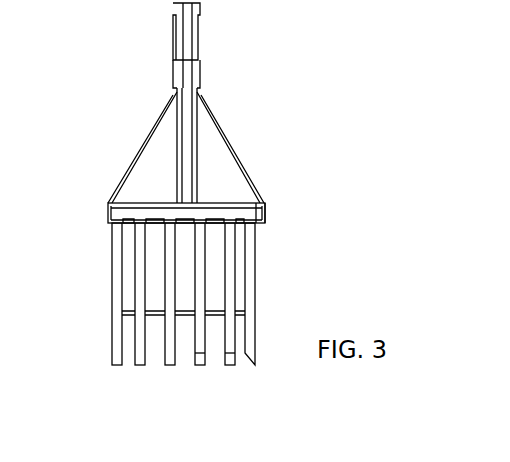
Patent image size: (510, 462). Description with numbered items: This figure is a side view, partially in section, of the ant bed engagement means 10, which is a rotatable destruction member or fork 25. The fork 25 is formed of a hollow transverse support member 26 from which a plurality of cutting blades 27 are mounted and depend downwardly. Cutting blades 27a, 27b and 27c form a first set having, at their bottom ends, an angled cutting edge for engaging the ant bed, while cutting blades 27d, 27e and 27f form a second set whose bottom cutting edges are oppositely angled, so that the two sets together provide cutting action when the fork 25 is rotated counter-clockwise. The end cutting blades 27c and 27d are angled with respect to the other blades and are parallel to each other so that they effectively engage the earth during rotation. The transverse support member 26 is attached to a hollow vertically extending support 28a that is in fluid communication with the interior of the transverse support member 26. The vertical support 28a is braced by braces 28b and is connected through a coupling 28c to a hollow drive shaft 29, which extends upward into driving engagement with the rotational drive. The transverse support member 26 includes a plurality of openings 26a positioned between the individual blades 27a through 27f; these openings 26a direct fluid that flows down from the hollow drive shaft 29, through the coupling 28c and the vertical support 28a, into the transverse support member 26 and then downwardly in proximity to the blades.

The ant bed engagement means 10 is at (262, 180).
The destruction member or fork 25 is at (263, 190).
The transverse support member 26 is at (150, 200).
The openings 26a is at (260, 228).
The cutting blades 27 is at (112, 270).
The cutting blade 27a is at (198, 370).
The cutting blade 27b is at (230, 368).
The end cutting blade 27c is at (252, 368).
The end cutting blade 27d is at (110, 368).
The cutting blade 27e is at (140, 368).
The cutting blade 27f is at (173, 370).
The vertically extending support 28a is at (193, 148).
The braces 28b is at (160, 122).
The coupling 28c is at (200, 76).
The hollow drive shaft 29 is at (198, 35).